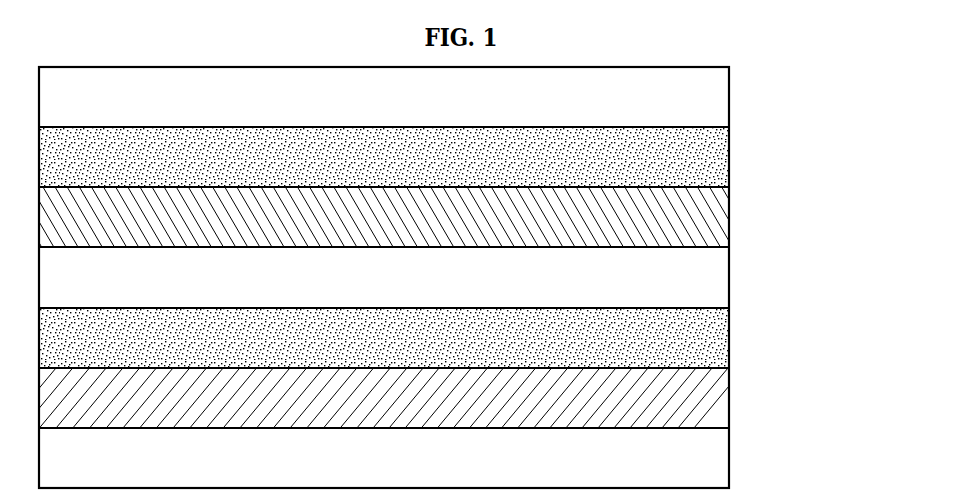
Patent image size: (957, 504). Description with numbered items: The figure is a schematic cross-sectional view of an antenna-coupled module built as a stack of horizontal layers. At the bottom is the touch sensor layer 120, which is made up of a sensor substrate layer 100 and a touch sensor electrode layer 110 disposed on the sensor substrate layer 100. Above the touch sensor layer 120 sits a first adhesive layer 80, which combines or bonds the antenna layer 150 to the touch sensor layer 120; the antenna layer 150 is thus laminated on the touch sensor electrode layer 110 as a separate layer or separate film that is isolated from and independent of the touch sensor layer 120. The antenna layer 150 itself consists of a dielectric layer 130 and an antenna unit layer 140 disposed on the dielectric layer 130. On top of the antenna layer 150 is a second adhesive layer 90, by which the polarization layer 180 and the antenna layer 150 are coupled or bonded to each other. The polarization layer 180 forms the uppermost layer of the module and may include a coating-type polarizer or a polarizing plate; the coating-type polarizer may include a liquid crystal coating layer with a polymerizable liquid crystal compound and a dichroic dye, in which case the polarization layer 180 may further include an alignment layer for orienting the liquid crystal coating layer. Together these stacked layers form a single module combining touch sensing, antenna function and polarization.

The polarization layer 180 is at (722, 103).
The second adhesive layer 90 is at (722, 157).
The antenna unit layer 140 is at (722, 216).
The dielectric layer 130 is at (722, 279).
The antenna layer 150 is at (446, 247).
The first adhesive layer 80 is at (722, 336).
The touch sensor electrode layer 110 is at (722, 397).
The sensor substrate layer 100 is at (722, 457).
The touch sensor layer 120 is at (443, 428).